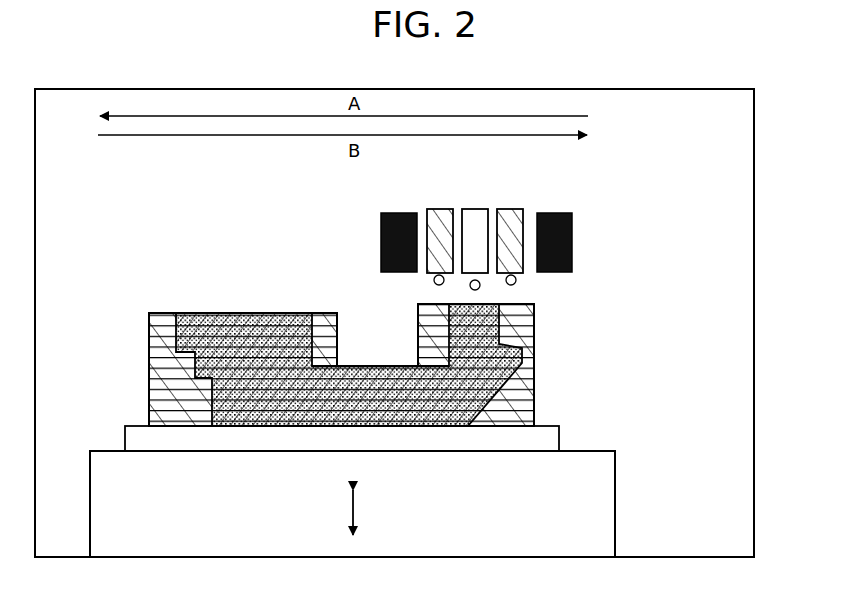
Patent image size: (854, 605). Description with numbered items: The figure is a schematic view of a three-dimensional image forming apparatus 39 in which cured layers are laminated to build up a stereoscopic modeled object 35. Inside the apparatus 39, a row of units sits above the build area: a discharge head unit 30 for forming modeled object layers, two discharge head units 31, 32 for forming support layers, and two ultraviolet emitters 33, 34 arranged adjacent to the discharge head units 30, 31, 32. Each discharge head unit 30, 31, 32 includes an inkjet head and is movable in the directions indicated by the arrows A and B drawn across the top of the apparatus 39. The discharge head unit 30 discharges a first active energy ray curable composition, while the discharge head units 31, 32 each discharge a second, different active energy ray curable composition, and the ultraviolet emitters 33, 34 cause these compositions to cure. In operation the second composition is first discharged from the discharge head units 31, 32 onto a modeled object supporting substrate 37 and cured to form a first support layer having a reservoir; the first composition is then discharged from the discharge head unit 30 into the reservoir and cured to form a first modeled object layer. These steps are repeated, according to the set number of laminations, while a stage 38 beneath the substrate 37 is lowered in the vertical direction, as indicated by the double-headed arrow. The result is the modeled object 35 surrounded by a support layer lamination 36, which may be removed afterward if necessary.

The discharge head unit 30 is at (472, 208).
The discharge head unit 31 is at (436, 208).
The discharge head unit 32 is at (507, 208).
The ultraviolet emitter 33 is at (394, 212).
The ultraviolet emitter 34 is at (550, 212).
The stereoscopic modeled object 35 is at (374, 336).
The support layer lamination 36 is at (544, 337).
The modeled object supporting substrate 37 is at (560, 438).
The stage 38 is at (616, 496).
The image forming apparatus 39 is at (762, 429).